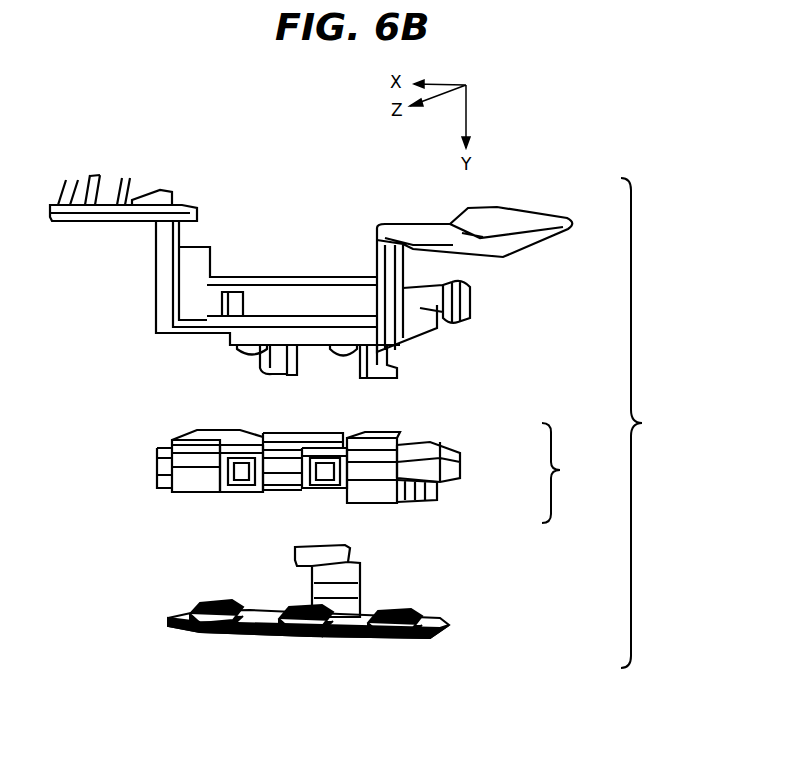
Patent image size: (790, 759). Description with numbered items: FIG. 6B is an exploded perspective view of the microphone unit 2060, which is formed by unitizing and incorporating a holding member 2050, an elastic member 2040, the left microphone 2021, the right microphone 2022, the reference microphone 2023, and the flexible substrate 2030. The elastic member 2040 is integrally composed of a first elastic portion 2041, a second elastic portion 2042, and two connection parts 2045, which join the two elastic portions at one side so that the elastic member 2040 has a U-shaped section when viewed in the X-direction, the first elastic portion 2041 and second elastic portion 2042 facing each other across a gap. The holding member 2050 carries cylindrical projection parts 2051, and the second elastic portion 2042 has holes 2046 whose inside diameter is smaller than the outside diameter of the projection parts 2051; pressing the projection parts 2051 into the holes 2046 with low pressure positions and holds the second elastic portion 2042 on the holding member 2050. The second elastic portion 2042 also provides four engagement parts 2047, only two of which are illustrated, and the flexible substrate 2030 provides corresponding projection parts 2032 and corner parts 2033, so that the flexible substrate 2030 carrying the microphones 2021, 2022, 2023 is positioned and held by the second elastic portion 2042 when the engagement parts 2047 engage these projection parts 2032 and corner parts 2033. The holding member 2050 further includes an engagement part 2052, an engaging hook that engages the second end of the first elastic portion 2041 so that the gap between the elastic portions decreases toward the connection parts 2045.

The microphone unit 2060 is at (666, 423).
The holding member 2050 is at (156, 270).
The projection parts 2051 is at (240, 350).
The engagement part 2052 is at (263, 377).
The elastic member 2040 is at (333, 469).
The first elastic portion 2041 is at (435, 493).
The second elastic portion 2042 is at (445, 460).
The connection parts 2045 is at (190, 487).
The holes 2046 is at (353, 430).
The engagement parts 2047 is at (330, 485).
The flexible substrate 2030 is at (441, 636).
The corner parts 2033 is at (443, 610).
The projection parts 2032 is at (233, 630).
The left microphone 2021 is at (400, 637).
The right microphone 2022 is at (185, 630).
The reference microphone 2023 is at (293, 633).